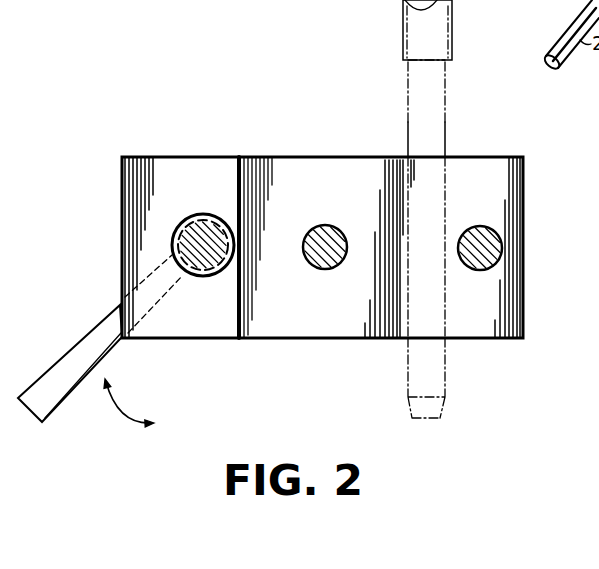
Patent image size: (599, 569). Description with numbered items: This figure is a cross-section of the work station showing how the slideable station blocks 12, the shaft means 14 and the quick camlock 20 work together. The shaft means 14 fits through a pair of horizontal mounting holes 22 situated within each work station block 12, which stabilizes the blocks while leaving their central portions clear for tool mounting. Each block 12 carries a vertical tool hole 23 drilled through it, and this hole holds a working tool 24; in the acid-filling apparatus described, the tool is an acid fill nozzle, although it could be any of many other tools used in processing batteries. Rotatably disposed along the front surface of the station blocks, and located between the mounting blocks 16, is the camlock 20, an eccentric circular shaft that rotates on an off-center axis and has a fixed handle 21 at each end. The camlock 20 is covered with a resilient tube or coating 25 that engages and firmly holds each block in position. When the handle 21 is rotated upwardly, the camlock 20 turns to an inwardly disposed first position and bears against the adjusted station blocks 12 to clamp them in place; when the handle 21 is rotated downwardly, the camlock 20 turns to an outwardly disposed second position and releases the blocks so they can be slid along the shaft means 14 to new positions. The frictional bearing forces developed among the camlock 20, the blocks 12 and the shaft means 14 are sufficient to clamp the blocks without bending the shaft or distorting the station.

The station block 12 is at (508, 203).
The shaft means 14 is at (313, 265).
The mounting block 16 is at (120, 223).
The camlock 20 is at (196, 228).
The handle 21 is at (82, 384).
The horizontal mounting hole 22 is at (318, 228).
The vertical tool hole 23 is at (445, 275).
The working tool 24 is at (448, 106).
The resilient tube or coating 25 is at (225, 274).